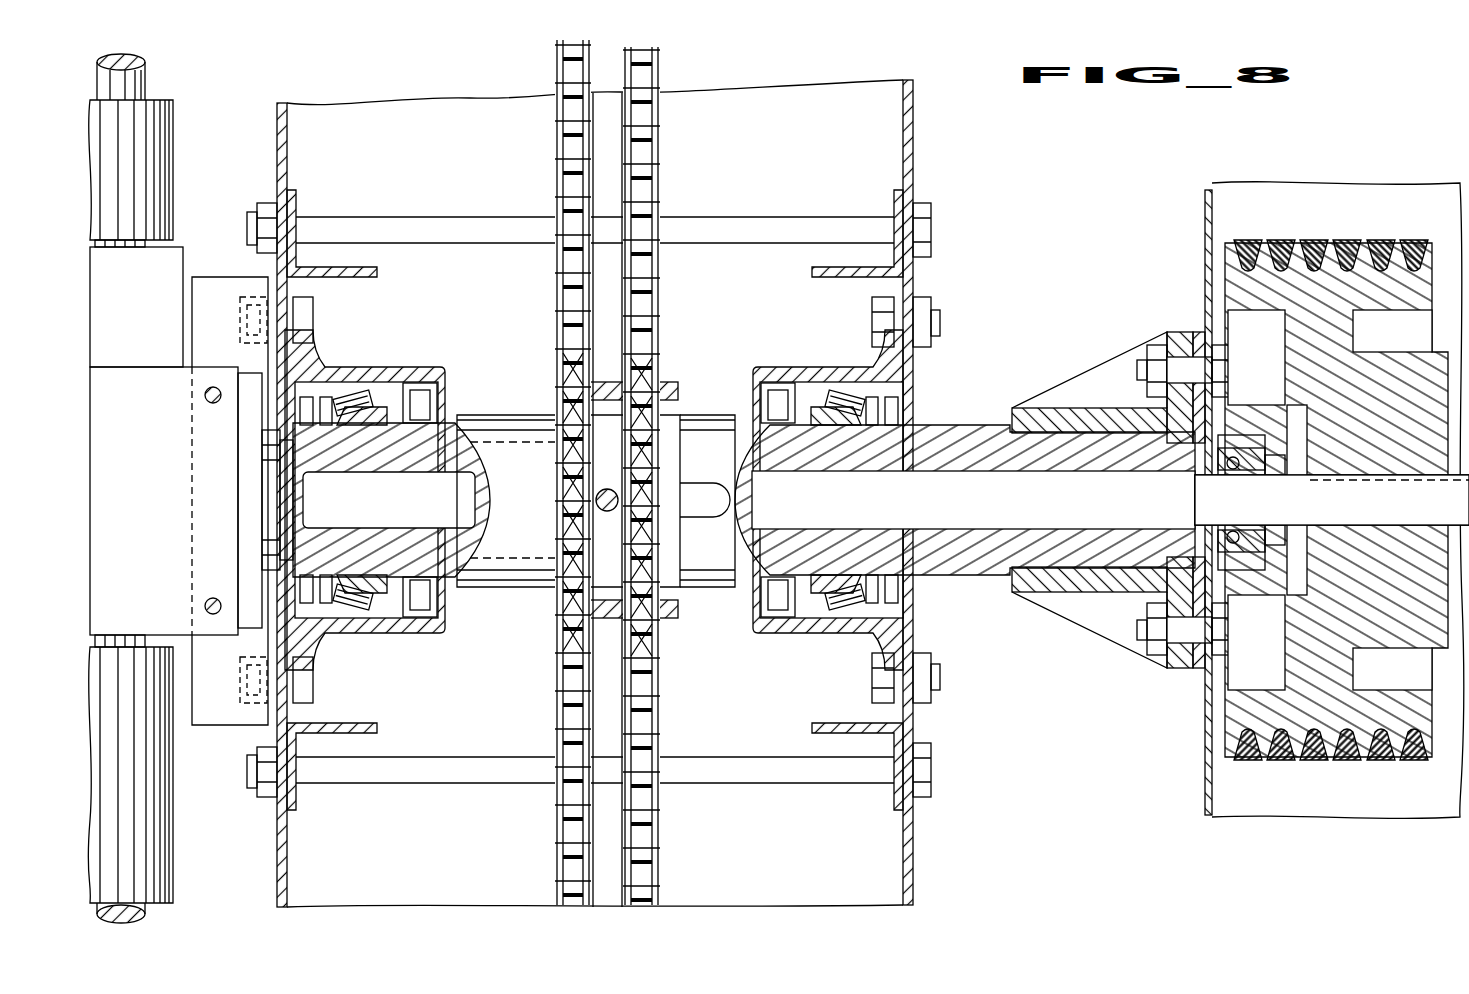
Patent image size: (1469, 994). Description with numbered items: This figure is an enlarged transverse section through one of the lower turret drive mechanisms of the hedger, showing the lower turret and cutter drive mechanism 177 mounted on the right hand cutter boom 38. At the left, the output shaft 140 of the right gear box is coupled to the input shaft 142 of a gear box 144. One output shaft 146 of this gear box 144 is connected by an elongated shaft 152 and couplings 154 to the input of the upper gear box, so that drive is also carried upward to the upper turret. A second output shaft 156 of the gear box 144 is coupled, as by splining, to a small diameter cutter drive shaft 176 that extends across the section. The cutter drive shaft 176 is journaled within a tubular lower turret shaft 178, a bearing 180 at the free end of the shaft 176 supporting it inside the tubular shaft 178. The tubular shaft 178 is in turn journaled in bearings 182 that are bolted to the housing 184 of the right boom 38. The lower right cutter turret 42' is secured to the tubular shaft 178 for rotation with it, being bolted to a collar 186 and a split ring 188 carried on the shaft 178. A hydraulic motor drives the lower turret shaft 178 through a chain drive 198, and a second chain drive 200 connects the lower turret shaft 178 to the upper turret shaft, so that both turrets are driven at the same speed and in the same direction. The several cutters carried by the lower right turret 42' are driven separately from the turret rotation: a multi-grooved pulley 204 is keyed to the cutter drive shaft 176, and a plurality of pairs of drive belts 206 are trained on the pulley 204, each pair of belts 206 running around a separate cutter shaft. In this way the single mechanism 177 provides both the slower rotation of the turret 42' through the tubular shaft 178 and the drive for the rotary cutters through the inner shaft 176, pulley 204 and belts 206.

The right hand cutter boom 38 is at (918, 106).
The housing 184 is at (913, 160).
The lower right cutter turret 42' is at (1288, 500).
The drive belts 206 is at (1330, 242).
The multi-grooved pulley 204 is at (1228, 288).
The split ring 188 is at (1197, 332).
The collar 186 is at (1053, 408).
The bearing 180 is at (1236, 530).
The cutter drive shaft 176 is at (888, 508).
The tubular lower turret shaft 178 is at (703, 418).
The lower turret and cutter drive mechanism 177 is at (497, 410).
The bearings 182 is at (364, 395).
The second output shaft 156 is at (296, 500).
The gear box 144 is at (157, 505).
The input shaft 142 is at (147, 620).
The output shaft 146 is at (128, 247).
The elongated shaft 152 is at (147, 72).
The couplings 154 is at (172, 130).
The output shaft 140 is at (150, 914).
The second chain drive 200 is at (557, 162).
The chain drive 198 is at (658, 162).